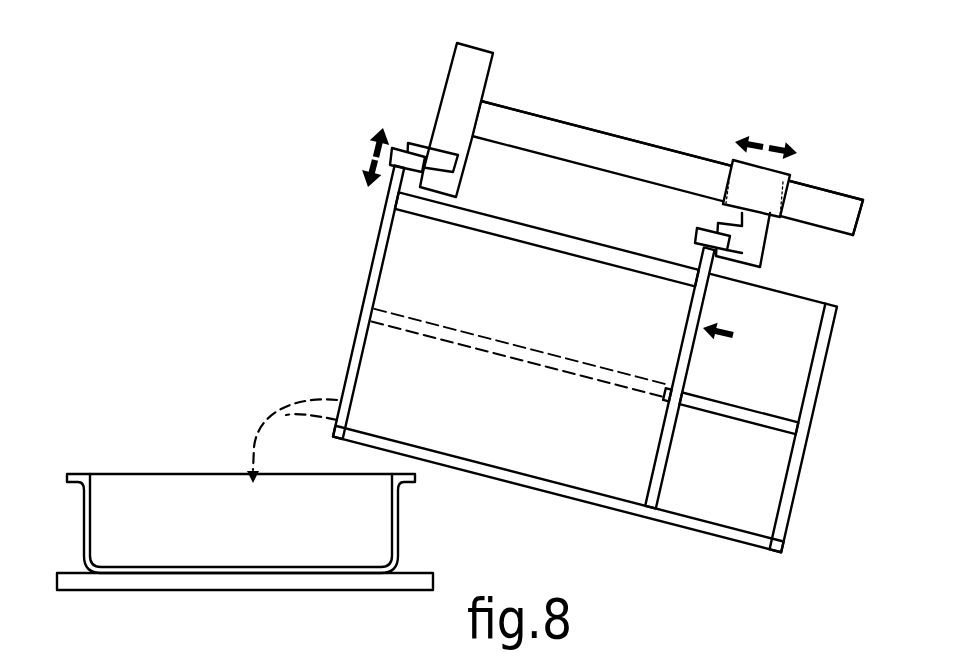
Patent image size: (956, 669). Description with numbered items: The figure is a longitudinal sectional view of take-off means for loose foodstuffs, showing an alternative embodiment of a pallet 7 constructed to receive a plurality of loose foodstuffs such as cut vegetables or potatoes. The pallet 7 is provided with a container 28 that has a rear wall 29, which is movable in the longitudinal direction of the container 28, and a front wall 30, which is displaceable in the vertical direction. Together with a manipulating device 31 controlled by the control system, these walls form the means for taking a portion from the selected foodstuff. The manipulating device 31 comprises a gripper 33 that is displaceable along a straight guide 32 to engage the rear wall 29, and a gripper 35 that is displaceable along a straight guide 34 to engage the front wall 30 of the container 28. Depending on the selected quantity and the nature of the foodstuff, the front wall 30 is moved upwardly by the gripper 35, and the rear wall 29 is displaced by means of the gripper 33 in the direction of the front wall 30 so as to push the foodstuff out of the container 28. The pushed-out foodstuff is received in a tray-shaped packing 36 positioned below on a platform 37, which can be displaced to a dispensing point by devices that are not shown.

The pallet 7 is at (700, 525).
The container 28 is at (797, 452).
The rear wall 29 is at (683, 368).
The front wall 30 is at (360, 333).
The manipulating device 31 is at (560, 111).
The straight guide 32 is at (608, 152).
The gripper 33 is at (750, 239).
The straight guide 34 is at (458, 78).
The gripper 35 is at (433, 155).
The tray-shaped packing 36 is at (85, 523).
The platform 37 is at (98, 583).